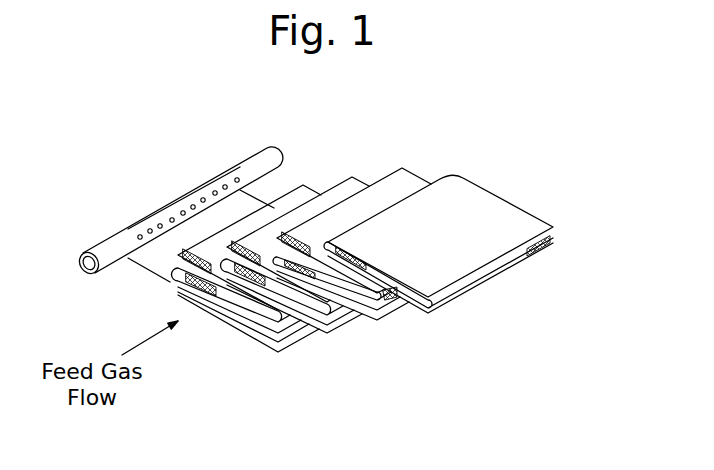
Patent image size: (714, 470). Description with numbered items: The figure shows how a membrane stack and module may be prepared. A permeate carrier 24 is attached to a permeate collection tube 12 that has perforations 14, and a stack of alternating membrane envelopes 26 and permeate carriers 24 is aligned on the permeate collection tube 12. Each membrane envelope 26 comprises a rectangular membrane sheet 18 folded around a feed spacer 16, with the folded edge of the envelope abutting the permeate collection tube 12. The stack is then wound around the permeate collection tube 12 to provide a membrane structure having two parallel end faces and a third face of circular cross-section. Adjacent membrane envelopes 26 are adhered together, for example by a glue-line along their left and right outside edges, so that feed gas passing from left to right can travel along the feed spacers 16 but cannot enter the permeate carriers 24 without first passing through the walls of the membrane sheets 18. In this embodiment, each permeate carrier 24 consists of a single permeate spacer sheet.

The permeate collection tube 12 is at (271, 160).
The perforations 14 is at (215, 191).
The feed spacer 16 is at (493, 264).
The membrane sheet 18 is at (467, 200).
The permeate carrier 24 is at (158, 262).
The membrane envelope 26 is at (340, 250).